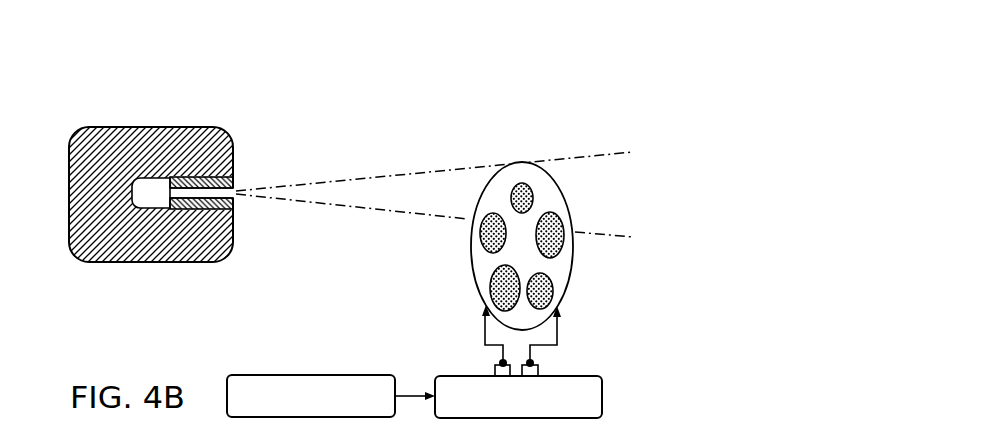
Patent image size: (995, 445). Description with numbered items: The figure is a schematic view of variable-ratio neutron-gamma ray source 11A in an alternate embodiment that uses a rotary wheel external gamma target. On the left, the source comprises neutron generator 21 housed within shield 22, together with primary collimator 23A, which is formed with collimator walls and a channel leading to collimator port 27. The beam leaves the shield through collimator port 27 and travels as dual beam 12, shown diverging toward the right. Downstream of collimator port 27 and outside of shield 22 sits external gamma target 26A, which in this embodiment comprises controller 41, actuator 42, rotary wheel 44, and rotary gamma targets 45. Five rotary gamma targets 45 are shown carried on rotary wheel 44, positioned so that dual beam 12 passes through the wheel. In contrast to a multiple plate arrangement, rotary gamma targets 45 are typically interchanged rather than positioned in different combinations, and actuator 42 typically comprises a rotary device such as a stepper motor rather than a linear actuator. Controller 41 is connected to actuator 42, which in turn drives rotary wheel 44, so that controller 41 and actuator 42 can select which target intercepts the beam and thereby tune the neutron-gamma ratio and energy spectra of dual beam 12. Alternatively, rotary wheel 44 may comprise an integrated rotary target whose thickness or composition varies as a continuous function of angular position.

The variable-ratio neutron-gamma ray source 11A is at (623, 56).
The dual beam 12 is at (599, 142).
The neutron generator 21 is at (145, 198).
The shield 22 is at (88, 143).
The primary collimator 23A is at (225, 166).
The external gamma target 26A is at (523, 210).
The collimator port 27 is at (251, 214).
The controller 41 is at (260, 375).
The actuator 42 is at (435, 378).
The rotary wheel 44 is at (471, 247).
The rotary gamma targets 45 is at (555, 235).